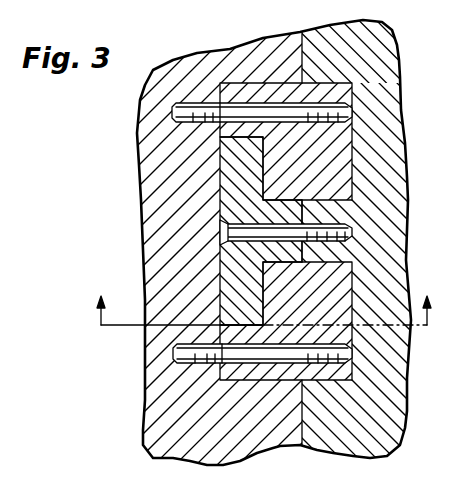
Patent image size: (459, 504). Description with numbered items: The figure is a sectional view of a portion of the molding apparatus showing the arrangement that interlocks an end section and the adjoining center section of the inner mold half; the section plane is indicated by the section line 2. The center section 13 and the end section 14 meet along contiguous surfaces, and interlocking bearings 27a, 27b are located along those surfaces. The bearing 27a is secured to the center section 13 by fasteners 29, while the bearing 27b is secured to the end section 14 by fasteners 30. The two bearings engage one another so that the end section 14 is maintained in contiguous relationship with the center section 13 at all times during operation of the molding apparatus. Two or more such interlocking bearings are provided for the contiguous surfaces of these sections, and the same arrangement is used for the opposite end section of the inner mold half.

The center section 13 is at (388, 199).
The end section 14 is at (143, 168).
The interlocking bearing 27a is at (218, 202).
The interlocking bearing 27b is at (353, 158).
The fasteners 29 is at (220, 230).
The fasteners 30 is at (347, 113).
The section line 2- 2 is at (263, 303).